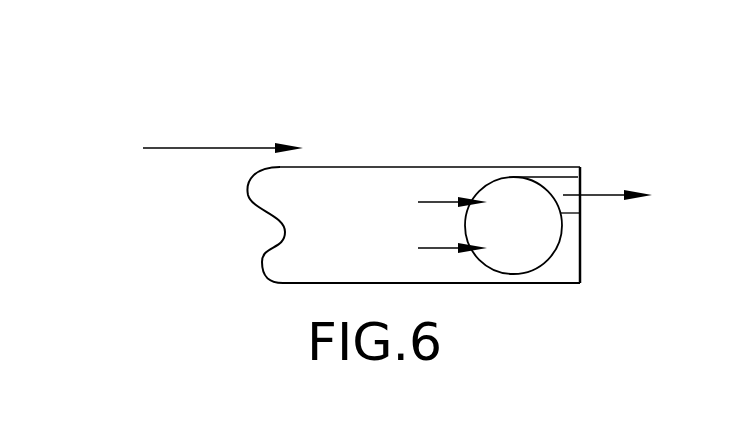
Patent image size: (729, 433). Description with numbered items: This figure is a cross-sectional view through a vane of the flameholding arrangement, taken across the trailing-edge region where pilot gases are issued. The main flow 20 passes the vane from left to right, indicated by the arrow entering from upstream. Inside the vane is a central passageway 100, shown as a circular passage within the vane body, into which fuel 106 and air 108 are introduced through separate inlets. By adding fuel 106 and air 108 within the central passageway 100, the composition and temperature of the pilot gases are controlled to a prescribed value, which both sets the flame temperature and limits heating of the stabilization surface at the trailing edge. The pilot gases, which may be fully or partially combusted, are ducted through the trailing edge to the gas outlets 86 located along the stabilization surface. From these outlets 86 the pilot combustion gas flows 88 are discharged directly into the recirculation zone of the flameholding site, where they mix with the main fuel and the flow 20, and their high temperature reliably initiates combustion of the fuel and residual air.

The flow 20 is at (210, 150).
The outlets 86 is at (584, 182).
The pilot combustion gas flows 88 is at (635, 198).
The central passageway 100 is at (537, 242).
The fuel 106 is at (440, 202).
The air 108 is at (430, 248).